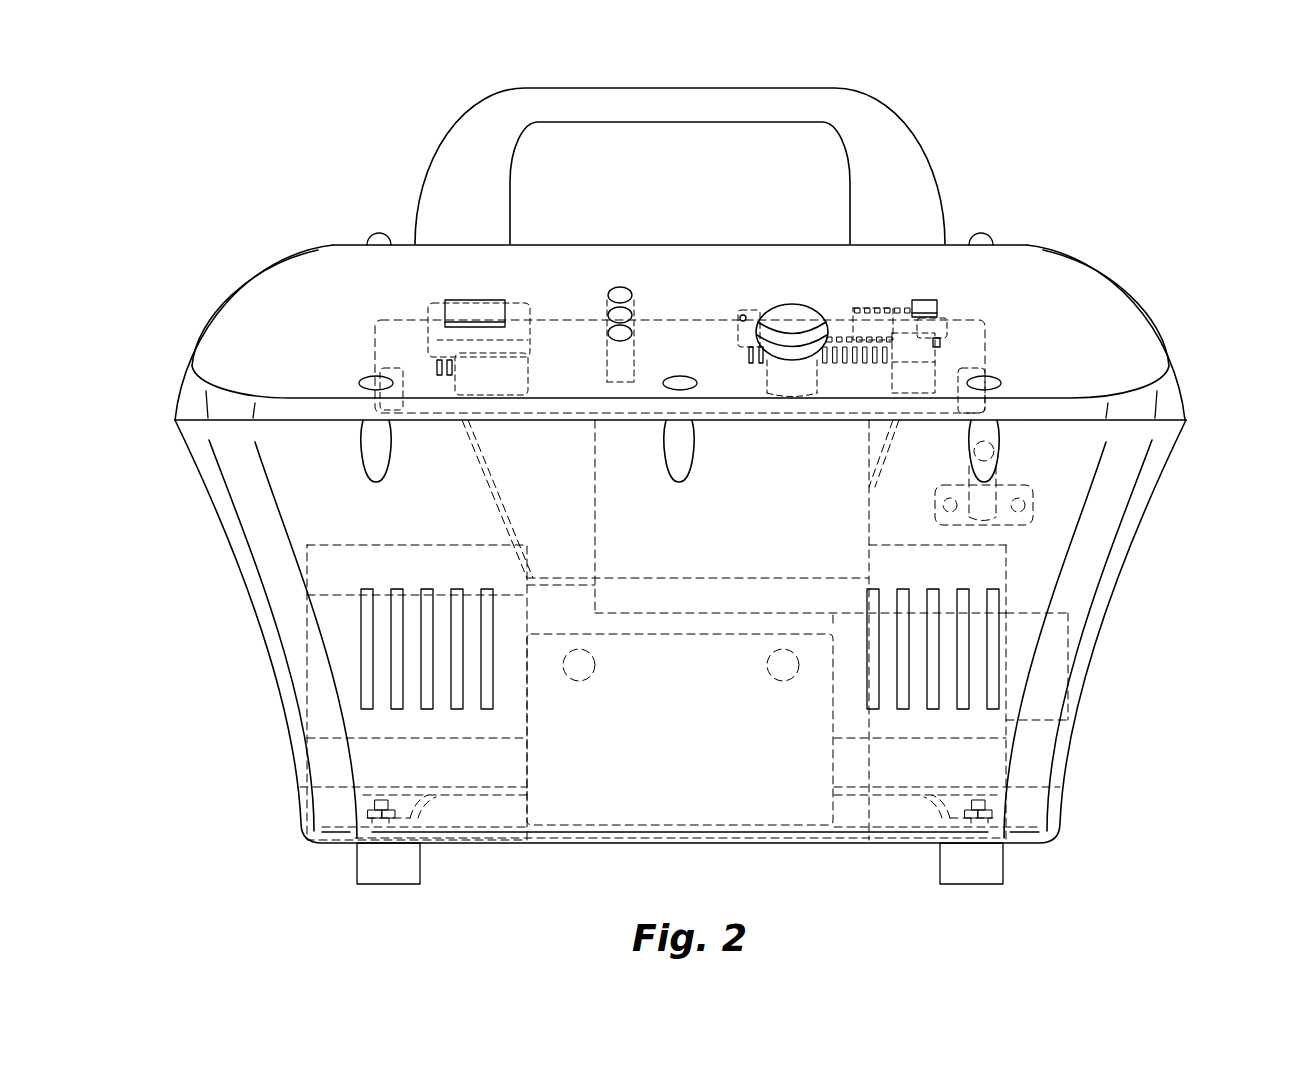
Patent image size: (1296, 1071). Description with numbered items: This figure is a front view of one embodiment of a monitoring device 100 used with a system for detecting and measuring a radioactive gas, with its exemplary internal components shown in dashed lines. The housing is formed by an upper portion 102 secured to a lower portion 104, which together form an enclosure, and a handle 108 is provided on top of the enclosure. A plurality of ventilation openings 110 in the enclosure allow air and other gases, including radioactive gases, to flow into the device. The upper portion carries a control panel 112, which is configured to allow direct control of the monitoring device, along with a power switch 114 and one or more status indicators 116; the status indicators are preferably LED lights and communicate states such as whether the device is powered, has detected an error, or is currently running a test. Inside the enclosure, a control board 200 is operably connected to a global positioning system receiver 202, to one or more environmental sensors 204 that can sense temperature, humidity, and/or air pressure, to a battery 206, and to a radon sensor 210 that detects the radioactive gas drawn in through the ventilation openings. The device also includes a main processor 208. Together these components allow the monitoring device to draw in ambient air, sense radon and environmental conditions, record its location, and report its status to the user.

The monitoring device 100 is at (1172, 202).
The upper portion 102 is at (1167, 386).
The lower portion 104 is at (1120, 465).
The handle 108 is at (850, 113).
The ventilation openings 110 is at (365, 642).
The control panel 112 is at (290, 297).
The power switch 114 is at (793, 312).
The status indicators 116 is at (590, 298).
The control board 200 is at (970, 348).
The global positioning system (GPS) receiver 202 is at (435, 312).
The environmental sensors 204 is at (473, 378).
The battery 206 is at (793, 522).
The main processor 208 is at (890, 325).
The radon sensor 210 is at (369, 576).